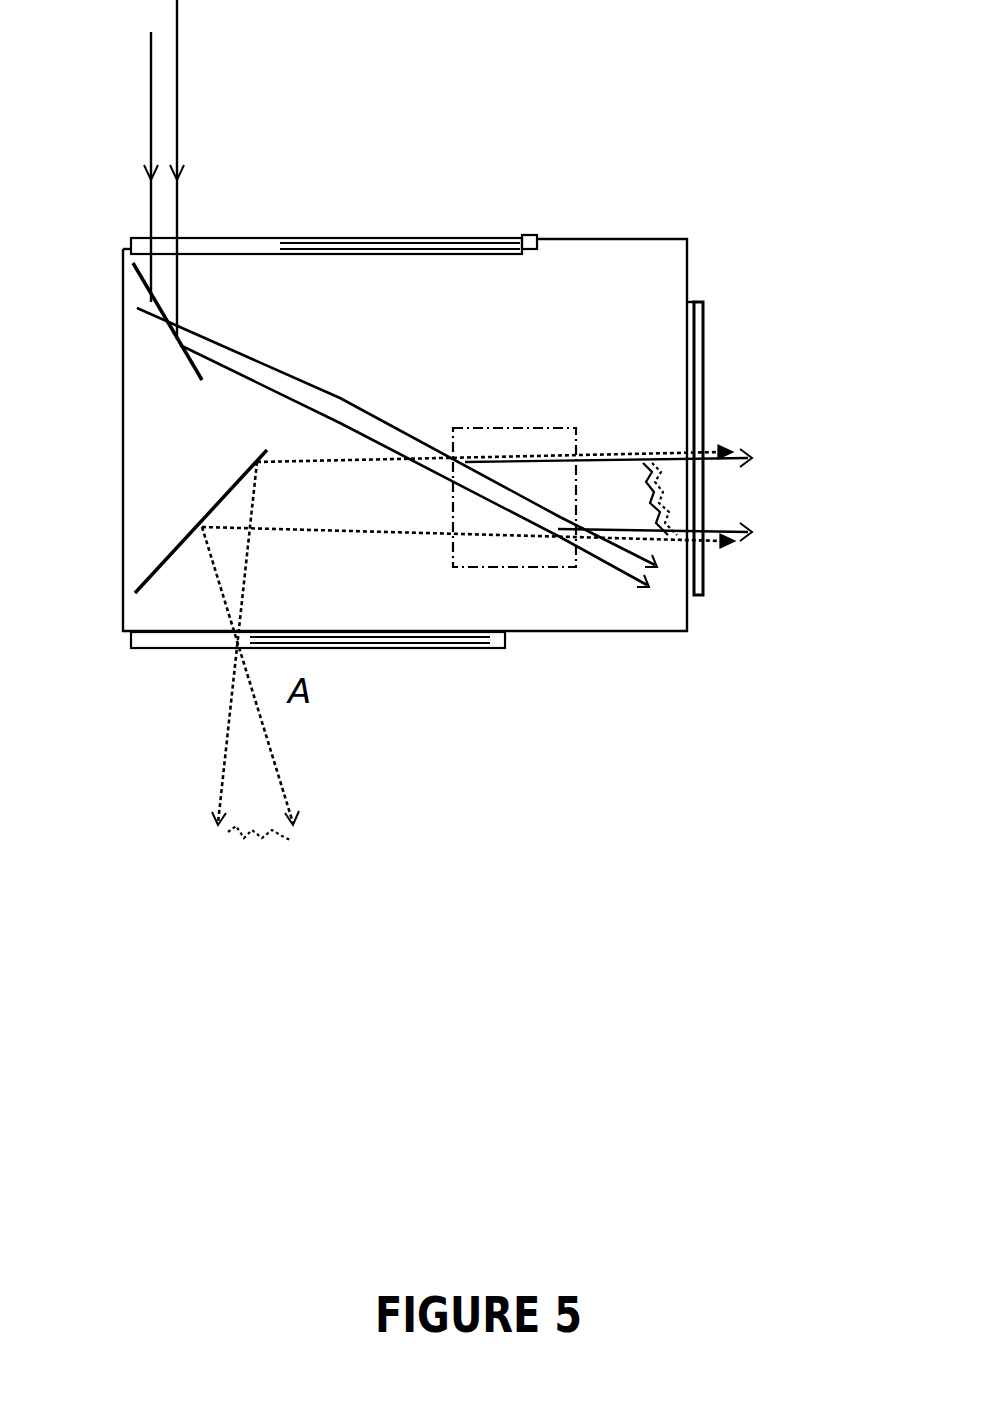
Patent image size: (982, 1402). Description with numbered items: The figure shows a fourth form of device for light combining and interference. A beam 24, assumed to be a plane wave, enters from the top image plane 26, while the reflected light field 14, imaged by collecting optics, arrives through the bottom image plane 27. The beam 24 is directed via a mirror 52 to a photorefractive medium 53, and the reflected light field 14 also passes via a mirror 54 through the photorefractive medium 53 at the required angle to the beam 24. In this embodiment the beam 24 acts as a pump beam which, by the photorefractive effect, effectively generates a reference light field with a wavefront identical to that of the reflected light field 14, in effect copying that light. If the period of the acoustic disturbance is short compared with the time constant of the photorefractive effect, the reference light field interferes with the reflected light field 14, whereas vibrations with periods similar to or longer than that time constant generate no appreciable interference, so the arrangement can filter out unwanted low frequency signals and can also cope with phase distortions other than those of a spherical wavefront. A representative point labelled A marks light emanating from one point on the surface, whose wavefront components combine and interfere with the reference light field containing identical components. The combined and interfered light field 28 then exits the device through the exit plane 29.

The reflected light field 14 is at (227, 753).
The beam 24 is at (177, 92).
The top image plane 26 is at (345, 237).
The bottom image plane 27 is at (168, 650).
The combined and interfered light field 28 is at (740, 452).
The exit plane 29 is at (702, 340).
The mirror 52 is at (137, 308).
The photorefractive medium 53 is at (503, 423).
The mirror 54 is at (215, 503).